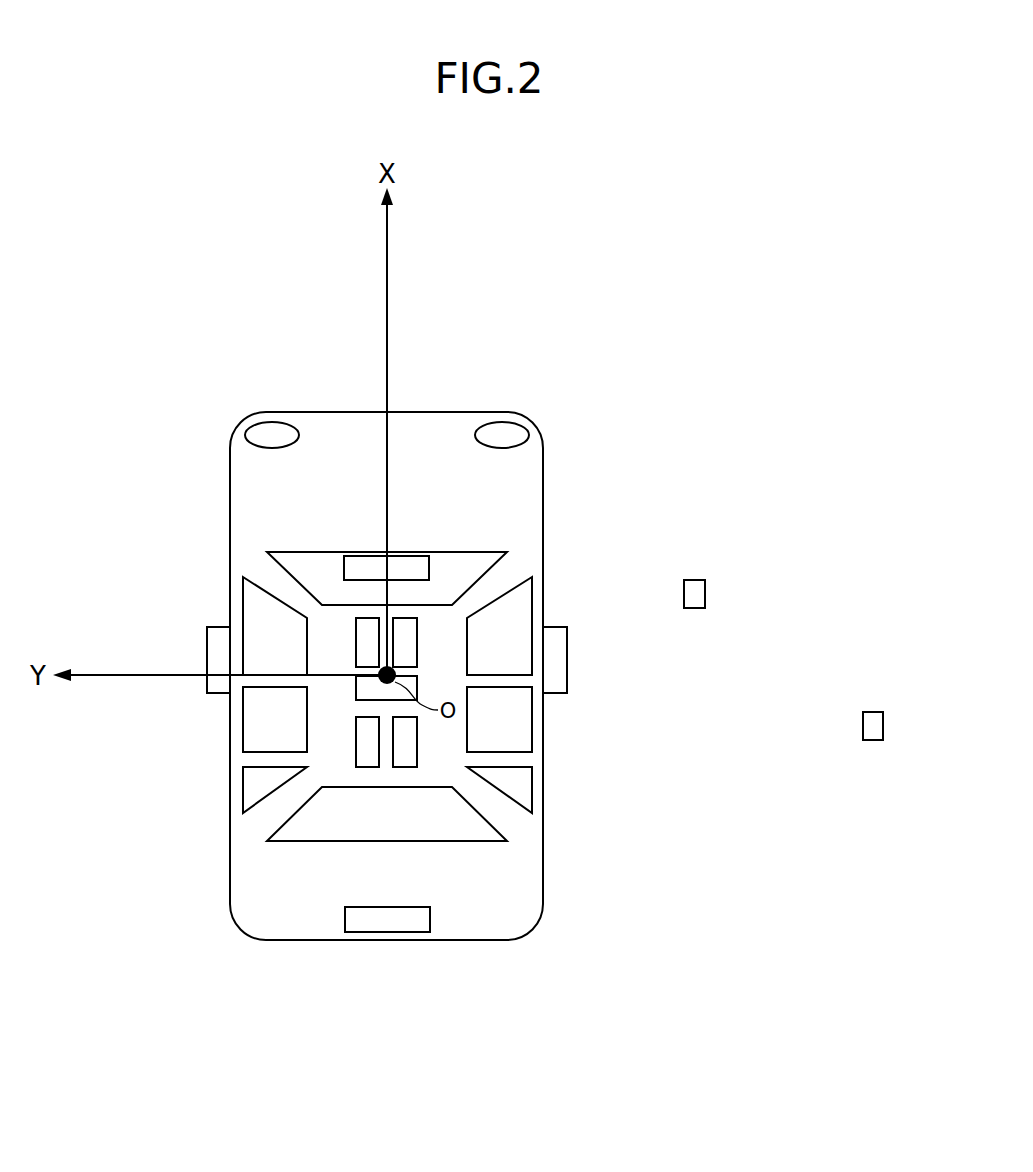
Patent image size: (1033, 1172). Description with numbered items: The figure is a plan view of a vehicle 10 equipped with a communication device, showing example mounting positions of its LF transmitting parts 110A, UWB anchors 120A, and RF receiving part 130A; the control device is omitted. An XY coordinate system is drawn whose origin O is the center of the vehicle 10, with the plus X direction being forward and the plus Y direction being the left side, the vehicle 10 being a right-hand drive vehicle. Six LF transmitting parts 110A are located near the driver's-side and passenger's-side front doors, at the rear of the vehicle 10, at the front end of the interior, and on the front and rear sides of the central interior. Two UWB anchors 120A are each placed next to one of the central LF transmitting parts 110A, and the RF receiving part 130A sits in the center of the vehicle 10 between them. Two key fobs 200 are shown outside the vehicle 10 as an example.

The vehicle 10 is at (388, 940).
The LF transmitting part 110A is at (567, 658).
The UWB anchor 120A is at (417, 645).
The RF receiving part 130A is at (356, 688).
The key fob 200 is at (697, 578).